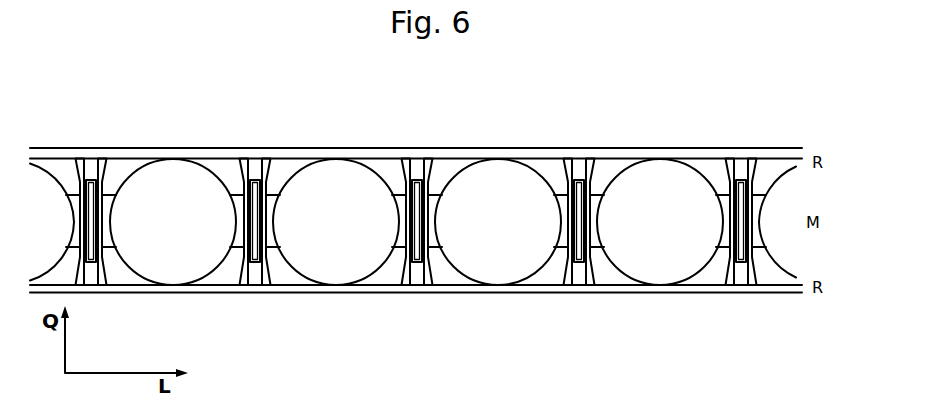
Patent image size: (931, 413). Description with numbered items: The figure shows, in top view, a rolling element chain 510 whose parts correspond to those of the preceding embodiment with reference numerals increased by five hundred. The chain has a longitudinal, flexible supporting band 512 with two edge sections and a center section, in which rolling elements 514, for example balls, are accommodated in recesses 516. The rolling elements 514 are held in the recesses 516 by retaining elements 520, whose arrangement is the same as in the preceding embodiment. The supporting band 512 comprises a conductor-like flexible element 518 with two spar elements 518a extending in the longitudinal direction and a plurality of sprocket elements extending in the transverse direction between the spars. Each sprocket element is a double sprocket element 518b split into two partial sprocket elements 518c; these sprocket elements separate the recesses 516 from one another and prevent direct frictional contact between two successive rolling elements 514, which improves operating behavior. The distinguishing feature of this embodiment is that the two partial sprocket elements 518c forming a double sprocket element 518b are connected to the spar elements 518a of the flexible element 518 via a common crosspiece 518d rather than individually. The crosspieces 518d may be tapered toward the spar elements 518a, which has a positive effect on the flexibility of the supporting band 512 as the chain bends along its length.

The rolling element chain 510 is at (128, 71).
The supporting band 512 is at (68, 158).
The rolling elements 514 is at (636, 248).
The recesses 516 is at (385, 177).
The flexible element 518 is at (198, 156).
The spar elements 518a is at (287, 287).
The double sprocket element 518b is at (413, 257).
The partial sprocket elements 518c is at (565, 240).
The crosspiece 518d is at (740, 272).
The retaining elements 520 is at (434, 202).